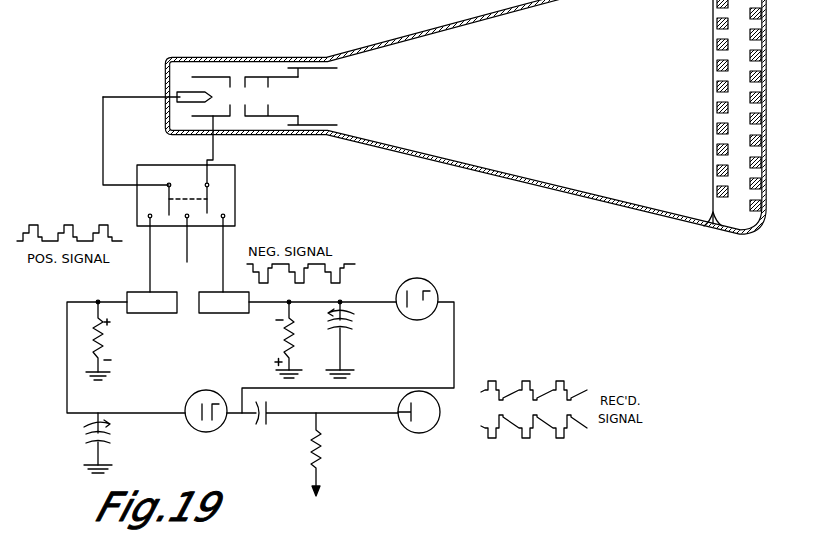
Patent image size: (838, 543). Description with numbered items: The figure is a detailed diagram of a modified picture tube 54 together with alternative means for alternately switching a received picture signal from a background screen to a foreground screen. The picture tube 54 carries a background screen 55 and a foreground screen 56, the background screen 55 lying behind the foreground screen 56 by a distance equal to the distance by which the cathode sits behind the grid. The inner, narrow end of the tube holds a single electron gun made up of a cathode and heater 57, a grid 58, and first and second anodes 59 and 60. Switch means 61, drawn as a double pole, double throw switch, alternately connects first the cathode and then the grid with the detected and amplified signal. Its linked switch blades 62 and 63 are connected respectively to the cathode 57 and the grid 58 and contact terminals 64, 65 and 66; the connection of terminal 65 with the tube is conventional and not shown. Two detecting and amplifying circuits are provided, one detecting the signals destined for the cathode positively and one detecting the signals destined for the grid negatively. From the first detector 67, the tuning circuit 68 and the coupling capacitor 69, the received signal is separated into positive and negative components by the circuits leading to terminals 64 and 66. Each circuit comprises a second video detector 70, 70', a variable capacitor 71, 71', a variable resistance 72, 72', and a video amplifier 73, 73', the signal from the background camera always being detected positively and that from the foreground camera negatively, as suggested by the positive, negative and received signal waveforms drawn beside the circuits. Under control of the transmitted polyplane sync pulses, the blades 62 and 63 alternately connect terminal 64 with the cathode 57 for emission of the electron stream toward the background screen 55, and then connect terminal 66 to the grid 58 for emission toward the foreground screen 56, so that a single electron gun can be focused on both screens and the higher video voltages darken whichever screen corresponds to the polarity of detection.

The picture tube 54 is at (384, 44).
The background screen 55 is at (713, 12).
The foreground screen 56 is at (757, 42).
The cathode and heater 57 is at (175, 90).
The grid 58 is at (206, 77).
The first anode 59 is at (258, 83).
The second anode 60 is at (303, 69).
The switch means 61 is at (237, 206).
The switch blade 62 is at (167, 207).
The switch blade 63 is at (218, 189).
The terminal 64 is at (152, 219).
The terminal 65 is at (190, 219).
The terminal 66 is at (226, 218).
The first detector 67 is at (400, 425).
The tuning circuit 68 is at (310, 447).
The coupling capacitor 69 is at (264, 428).
The second video detector 70 is at (198, 420).
The second video detector 70' is at (434, 297).
The variable capacitor 71 is at (83, 443).
The variable capacitor 71' is at (349, 340).
The variable resistance 72 is at (113, 341).
The variable resistance 72' is at (299, 340).
The video amplifier 73 is at (152, 322).
The video amplifier 73' is at (224, 322).